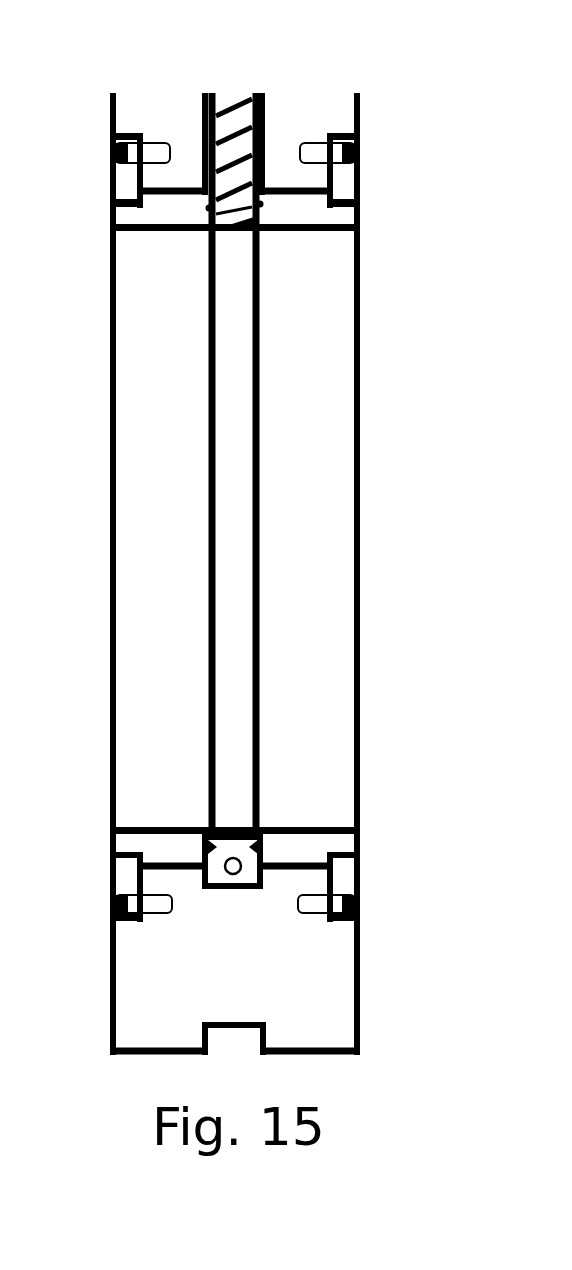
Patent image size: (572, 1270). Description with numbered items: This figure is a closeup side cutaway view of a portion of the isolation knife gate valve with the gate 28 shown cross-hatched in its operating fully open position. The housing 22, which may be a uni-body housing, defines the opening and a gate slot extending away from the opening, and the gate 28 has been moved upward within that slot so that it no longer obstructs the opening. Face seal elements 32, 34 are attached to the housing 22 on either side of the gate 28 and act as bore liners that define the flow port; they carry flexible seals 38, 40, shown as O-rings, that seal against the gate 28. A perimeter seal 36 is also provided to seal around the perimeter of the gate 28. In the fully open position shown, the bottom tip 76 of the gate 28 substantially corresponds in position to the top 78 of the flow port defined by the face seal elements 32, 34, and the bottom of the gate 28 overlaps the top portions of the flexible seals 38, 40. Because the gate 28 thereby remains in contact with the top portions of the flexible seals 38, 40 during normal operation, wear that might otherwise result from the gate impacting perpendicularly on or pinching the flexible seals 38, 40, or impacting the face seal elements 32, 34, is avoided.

The housing 22 is at (128, 962).
The gate 28 is at (207, 120).
The face seal element 32 is at (150, 830).
The face seal element 34 is at (270, 828).
The perimeter seal 36 is at (240, 893).
The flexible seal 38 is at (207, 207).
The flexible seal 40 is at (263, 848).
The bottom tip 76 is at (240, 228).
The top of flow port 78 is at (283, 228).